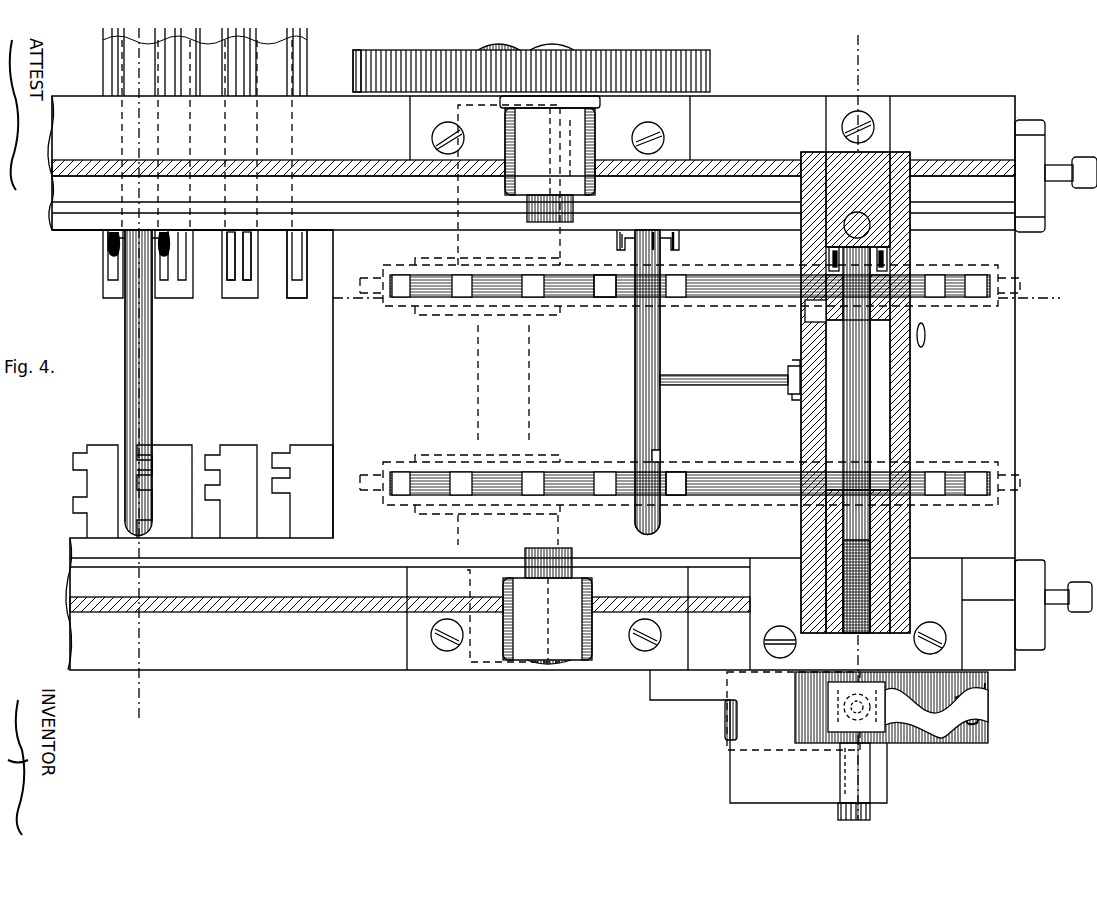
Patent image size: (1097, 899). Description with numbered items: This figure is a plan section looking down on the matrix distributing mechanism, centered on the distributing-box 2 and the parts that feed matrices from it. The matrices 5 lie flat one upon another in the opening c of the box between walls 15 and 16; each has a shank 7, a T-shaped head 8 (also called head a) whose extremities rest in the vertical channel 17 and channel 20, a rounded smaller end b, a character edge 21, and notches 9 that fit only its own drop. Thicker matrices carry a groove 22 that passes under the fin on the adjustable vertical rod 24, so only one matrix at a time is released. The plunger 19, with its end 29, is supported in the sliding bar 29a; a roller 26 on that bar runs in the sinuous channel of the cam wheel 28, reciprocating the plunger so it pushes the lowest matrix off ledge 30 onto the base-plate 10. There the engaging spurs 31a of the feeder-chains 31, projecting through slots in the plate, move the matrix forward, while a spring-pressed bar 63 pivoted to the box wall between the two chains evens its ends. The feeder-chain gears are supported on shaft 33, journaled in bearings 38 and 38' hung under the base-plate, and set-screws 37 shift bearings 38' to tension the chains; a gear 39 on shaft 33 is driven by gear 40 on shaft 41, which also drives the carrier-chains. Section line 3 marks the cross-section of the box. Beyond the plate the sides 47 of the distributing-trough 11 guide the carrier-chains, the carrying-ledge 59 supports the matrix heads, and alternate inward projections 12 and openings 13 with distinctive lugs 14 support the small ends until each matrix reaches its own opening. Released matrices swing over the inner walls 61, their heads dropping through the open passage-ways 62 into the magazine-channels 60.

The distributing-box 2 is at (885, 170).
The section line 3 3 is at (812, 822).
The matrices 5 is at (920, 430).
The body portion or shank 7 is at (152, 377).
The head 8 is at (130, 232).
The notches or recesses 9 is at (155, 455).
The base-plate 10 is at (333, 353).
The distributing-trough 11 is at (340, 176).
The inward projections 12 is at (87, 478).
The openings 13 is at (272, 450).
The lugs 14 is at (165, 450).
The wall 15 is at (826, 516).
The wall 16 is at (805, 318).
The vertical channel 17 is at (829, 258).
The plunger 19 is at (905, 576).
The channel 20 is at (826, 221).
The edge 21 is at (125, 410).
The groove or channel 22 is at (163, 232).
The vertical rod or bar 24 is at (866, 218).
The roller 26 is at (885, 743).
The cam roller or wheel 28 is at (962, 743).
The end of the plunger 29 is at (872, 550).
The sliding bar 29a is at (840, 745).
The ledge 30 is at (900, 503).
The feeder-chains 31 is at (705, 297).
The engaging spurs 31a is at (690, 472).
The shaft 33 is at (500, 42).
The set-screws 37 is at (1056, 185).
The bearings 38 is at (735, 384).
The bearings 38' is at (1040, 184).
The gear 39 is at (353, 70).
The gear 40 is at (420, 50).
The shaft 41 is at (578, 42).
The sides of the distributing-box 47 is at (90, 168).
The carrying-ledge 59 is at (312, 232).
The magazine-channels 60 is at (218, 306).
The inner walls 61 is at (251, 270).
The open passage-ways 62 is at (236, 258).
The spring-pressed bar 63 is at (715, 375).
The head a is at (110, 232).
The smaller end b is at (660, 521).
The opening c is at (875, 393).